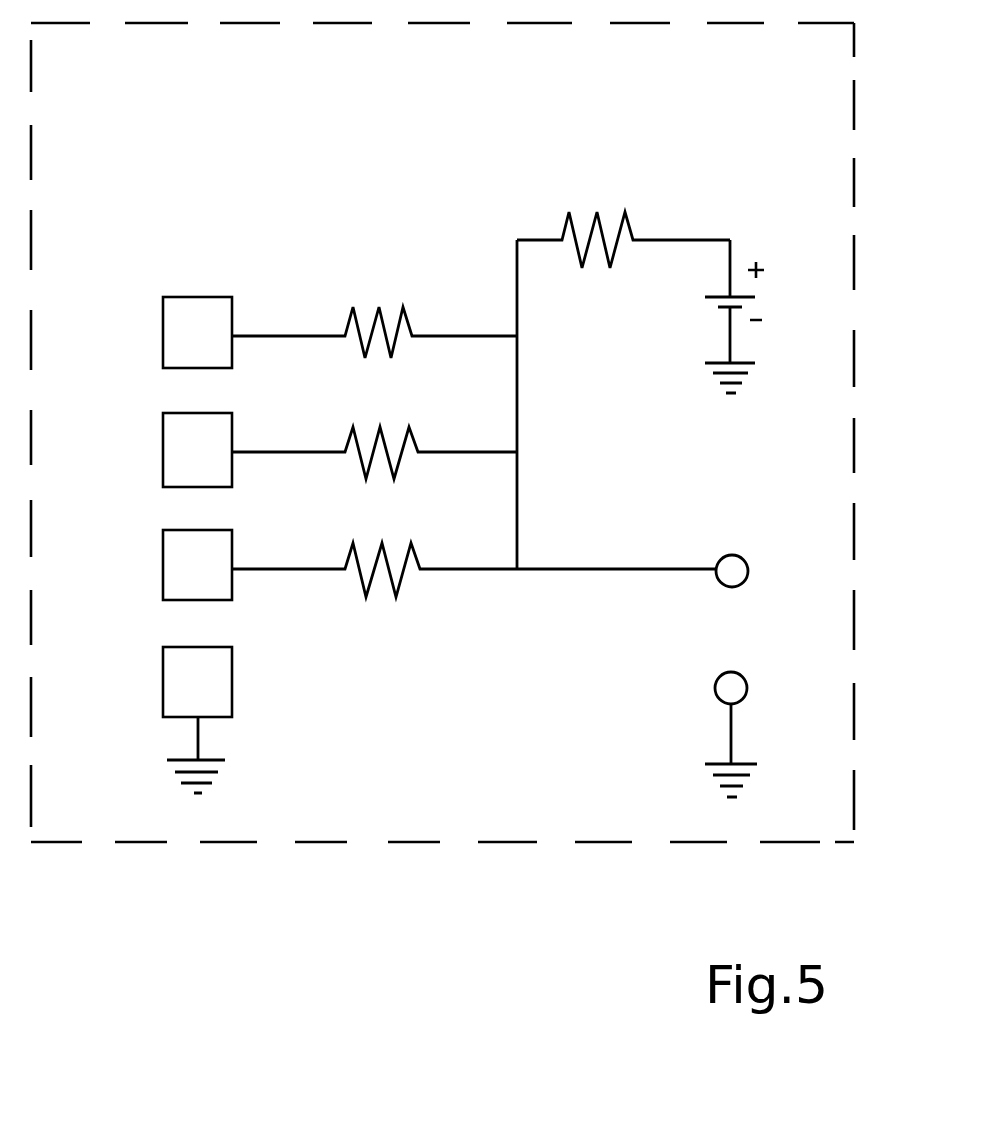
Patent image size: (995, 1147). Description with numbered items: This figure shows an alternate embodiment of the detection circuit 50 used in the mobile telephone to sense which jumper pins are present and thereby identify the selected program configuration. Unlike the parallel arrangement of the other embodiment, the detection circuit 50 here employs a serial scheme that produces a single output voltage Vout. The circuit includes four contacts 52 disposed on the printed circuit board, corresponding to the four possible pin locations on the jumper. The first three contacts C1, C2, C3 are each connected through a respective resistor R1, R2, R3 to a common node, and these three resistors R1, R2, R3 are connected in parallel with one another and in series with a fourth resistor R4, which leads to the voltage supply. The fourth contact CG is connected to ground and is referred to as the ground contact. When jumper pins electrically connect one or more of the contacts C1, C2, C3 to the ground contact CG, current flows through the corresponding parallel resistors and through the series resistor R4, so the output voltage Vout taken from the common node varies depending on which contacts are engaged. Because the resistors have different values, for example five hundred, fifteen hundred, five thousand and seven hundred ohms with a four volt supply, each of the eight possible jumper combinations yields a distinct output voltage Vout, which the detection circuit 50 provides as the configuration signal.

The detection circuit 50 is at (855, 250).
The contacts 52 is at (162, 506).
The first contact C1 is at (197, 332).
The second contact C2 is at (197, 450).
The third contact C3 is at (197, 565).
The ground contact CG is at (197, 720).
The resistor R1 is at (374, 346).
The resistor R2 is at (374, 464).
The resistor R3 is at (474, 581).
The resistor R4 is at (623, 253).
The output voltage Vout is at (749, 676).